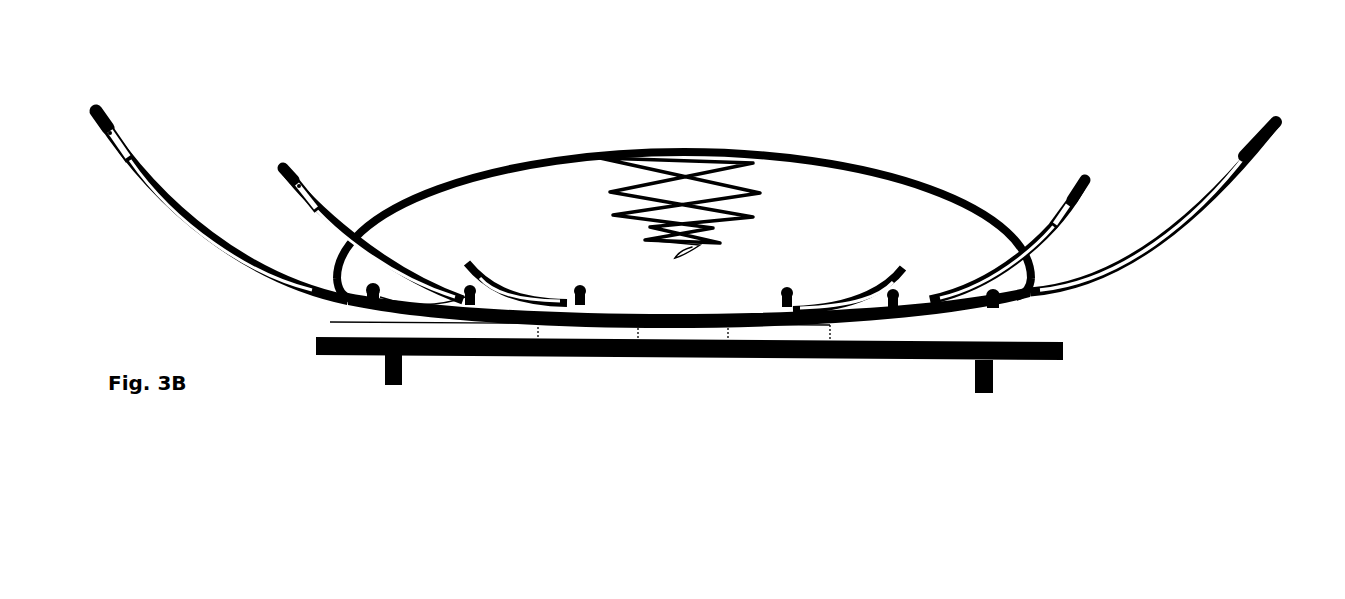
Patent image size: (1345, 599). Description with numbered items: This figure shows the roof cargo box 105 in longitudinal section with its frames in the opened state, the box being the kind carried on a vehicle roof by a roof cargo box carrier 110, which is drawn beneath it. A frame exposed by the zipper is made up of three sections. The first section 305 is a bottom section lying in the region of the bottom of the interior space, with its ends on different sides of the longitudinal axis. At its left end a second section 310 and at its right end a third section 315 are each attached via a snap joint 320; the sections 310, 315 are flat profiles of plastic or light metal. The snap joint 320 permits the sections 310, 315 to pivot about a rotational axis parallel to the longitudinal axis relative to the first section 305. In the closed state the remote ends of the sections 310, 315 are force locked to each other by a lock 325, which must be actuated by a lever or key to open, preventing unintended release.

The roof cargo box 105 is at (1008, 80).
The roof cargo box carrier 110 is at (1087, 323).
The first section 305 is at (427, 310).
The second section 310 is at (222, 242).
The third section 315 is at (1173, 242).
The snap joint 320 is at (378, 300).
The lock 325 is at (130, 165).